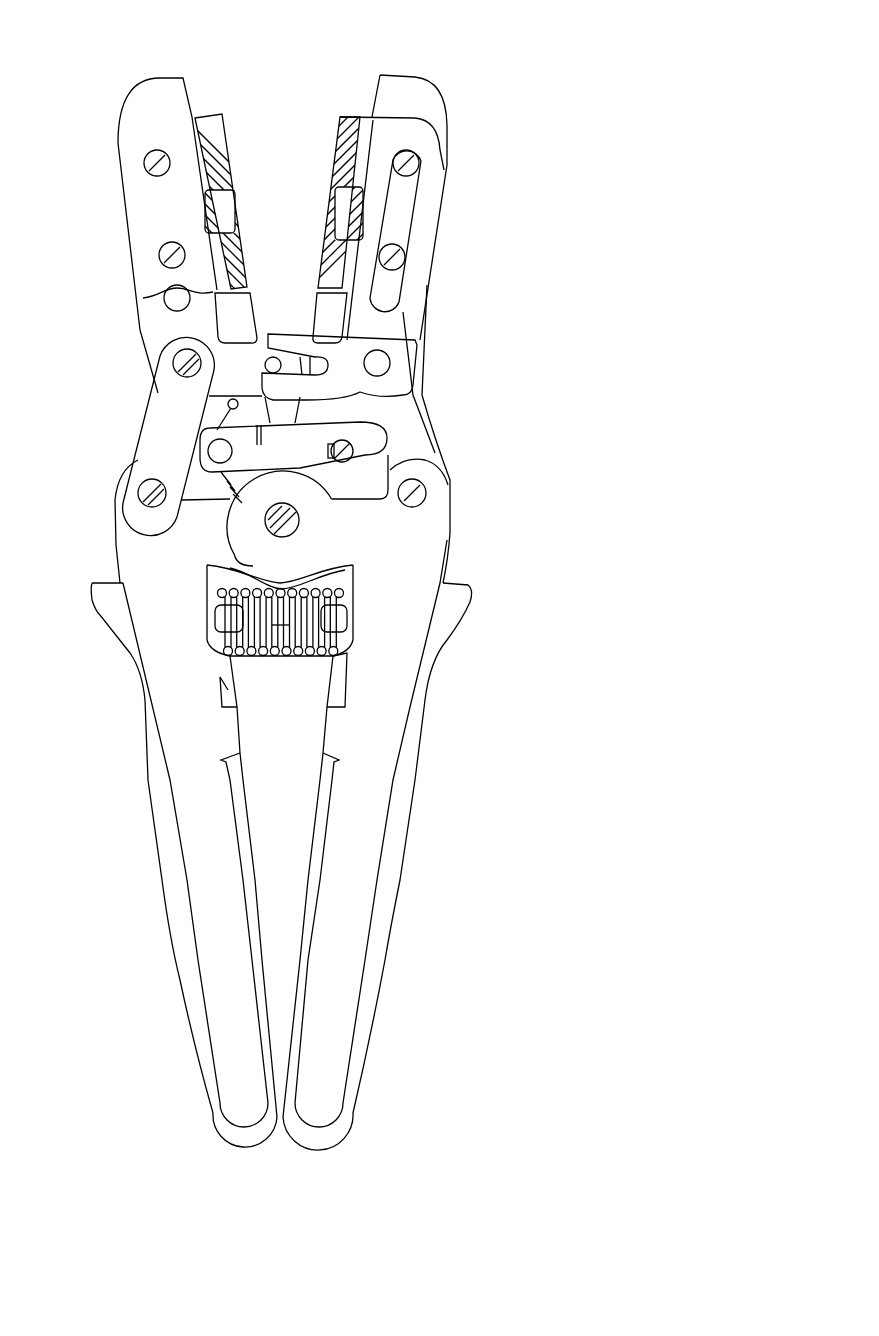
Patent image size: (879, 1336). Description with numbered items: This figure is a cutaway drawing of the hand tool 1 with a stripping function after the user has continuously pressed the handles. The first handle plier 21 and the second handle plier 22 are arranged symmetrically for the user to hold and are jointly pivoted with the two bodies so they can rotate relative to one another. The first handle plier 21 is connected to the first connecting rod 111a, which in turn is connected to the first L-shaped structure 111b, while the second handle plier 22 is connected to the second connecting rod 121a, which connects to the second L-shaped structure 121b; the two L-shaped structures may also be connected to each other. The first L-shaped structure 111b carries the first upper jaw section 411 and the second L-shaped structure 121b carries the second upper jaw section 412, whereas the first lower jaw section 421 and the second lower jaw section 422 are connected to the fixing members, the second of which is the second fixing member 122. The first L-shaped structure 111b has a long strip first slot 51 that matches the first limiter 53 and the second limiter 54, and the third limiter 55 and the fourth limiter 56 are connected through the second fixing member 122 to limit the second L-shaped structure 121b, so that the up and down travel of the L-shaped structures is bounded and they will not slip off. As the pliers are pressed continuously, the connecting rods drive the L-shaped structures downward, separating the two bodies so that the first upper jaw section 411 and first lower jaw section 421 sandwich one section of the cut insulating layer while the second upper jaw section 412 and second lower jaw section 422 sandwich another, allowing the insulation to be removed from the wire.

The hand tool 1 is at (514, 58).
The first handle plier 21 is at (388, 757).
The second handle plier 22 is at (170, 755).
The first slot 51 is at (410, 305).
The first limiter 53 is at (420, 170).
The second limiter 54 is at (405, 266).
The third limiter 55 is at (144, 160).
The fourth limiter 56 is at (158, 250).
The first connecting rod 111a is at (412, 437).
The first L-shaped structure 111b is at (418, 360).
The second connecting rod 121a is at (158, 411).
The second L-shaped structure 121b is at (143, 313).
The second fixing member 122 is at (142, 100).
The first upper jaw section 411 is at (352, 113).
The second upper jaw section 412 is at (217, 110).
The first lower jaw section 421 is at (320, 260).
The second lower jaw section 422 is at (237, 240).